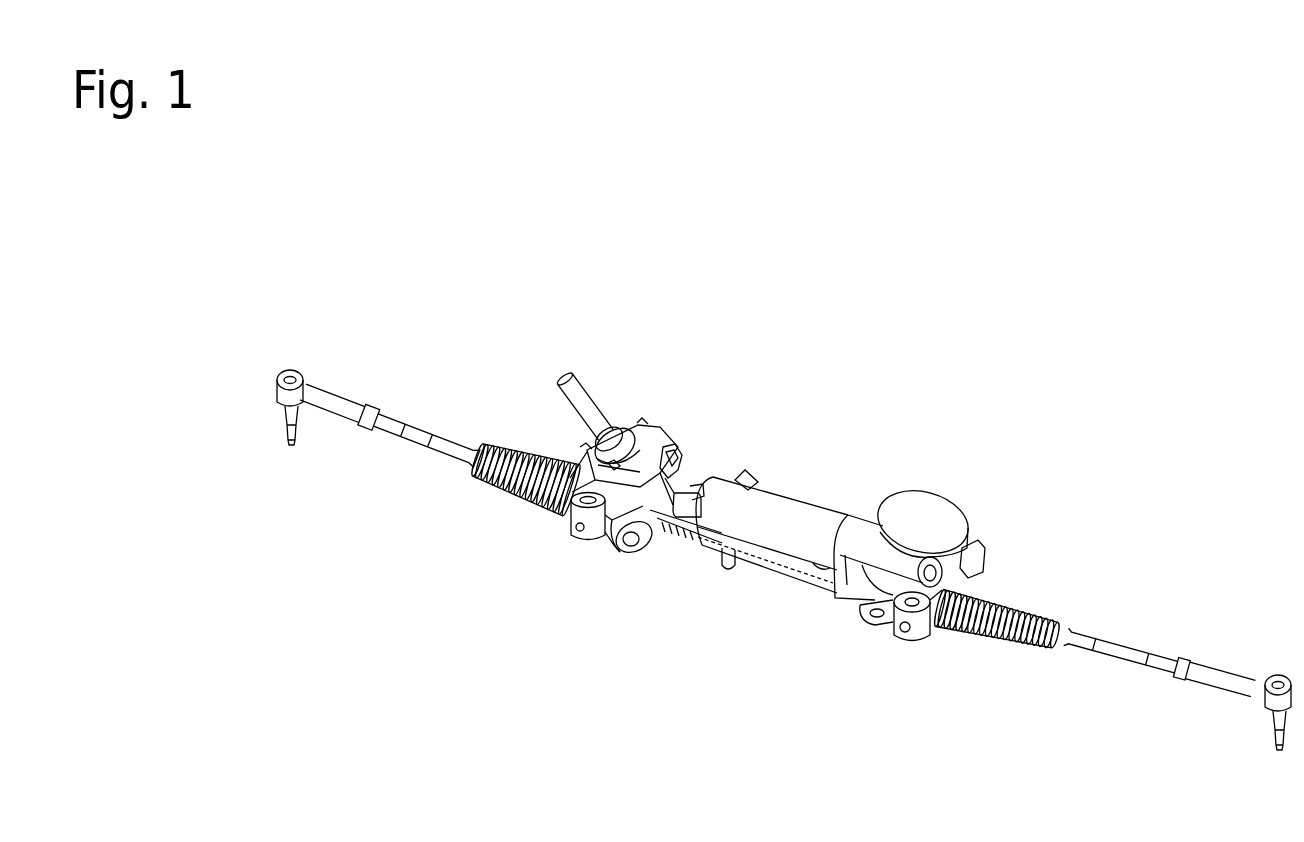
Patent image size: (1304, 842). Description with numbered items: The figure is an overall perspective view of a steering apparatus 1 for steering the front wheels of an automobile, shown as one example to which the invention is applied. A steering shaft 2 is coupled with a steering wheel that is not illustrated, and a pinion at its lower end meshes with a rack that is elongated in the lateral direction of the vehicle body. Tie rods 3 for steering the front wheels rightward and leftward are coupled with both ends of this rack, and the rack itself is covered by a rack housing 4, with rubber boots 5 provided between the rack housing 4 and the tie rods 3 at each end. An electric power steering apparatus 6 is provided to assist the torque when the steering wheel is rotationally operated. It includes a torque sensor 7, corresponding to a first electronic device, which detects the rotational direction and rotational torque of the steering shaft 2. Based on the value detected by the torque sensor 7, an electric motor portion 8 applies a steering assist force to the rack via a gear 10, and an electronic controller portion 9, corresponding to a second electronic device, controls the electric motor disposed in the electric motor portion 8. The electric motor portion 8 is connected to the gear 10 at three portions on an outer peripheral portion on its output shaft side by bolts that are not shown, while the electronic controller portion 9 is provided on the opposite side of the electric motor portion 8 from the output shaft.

The steering apparatus 1 is at (757, 582).
The steering shaft 2 is at (591, 395).
The tie rods 3 is at (336, 400).
The rack housing 4 is at (920, 630).
The rubber boots 5 is at (510, 445).
The electric power steering apparatus 6 is at (765, 380).
The torque sensor 7 is at (670, 442).
The electric motor portion 8 is at (815, 503).
The electronic controller portion 9 is at (723, 483).
The gear 10 is at (927, 502).